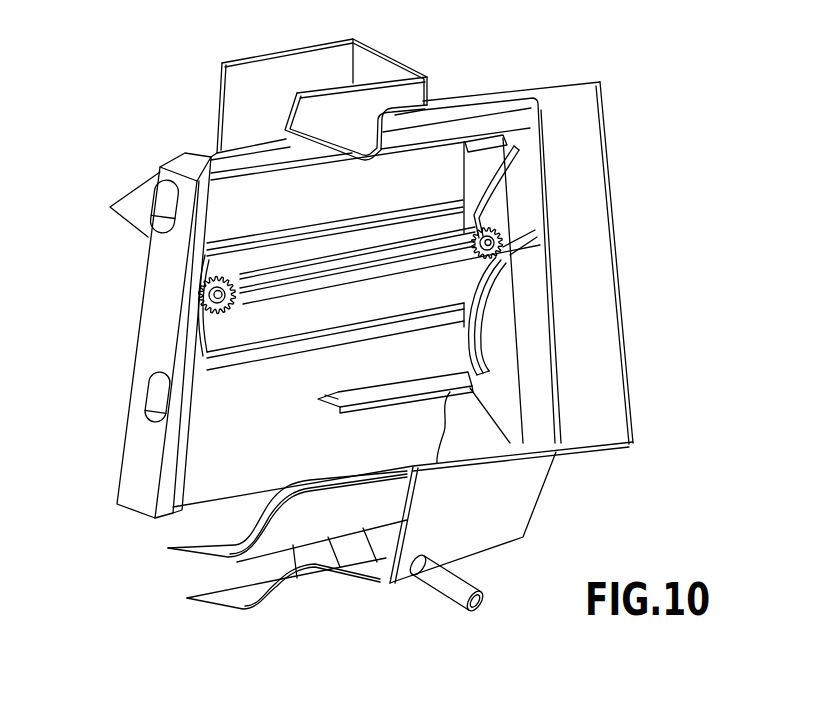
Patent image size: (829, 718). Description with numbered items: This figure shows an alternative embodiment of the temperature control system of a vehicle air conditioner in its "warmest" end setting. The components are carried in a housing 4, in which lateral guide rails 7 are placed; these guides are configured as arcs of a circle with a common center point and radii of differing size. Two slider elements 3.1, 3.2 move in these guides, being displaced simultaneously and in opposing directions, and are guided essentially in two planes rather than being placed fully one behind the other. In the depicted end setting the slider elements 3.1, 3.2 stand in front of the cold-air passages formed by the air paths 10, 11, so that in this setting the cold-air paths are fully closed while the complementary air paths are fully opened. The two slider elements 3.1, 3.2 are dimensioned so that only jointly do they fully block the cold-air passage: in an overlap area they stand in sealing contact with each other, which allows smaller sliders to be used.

The air path 10 is at (250, 196).
The slider element 3.1 is at (440, 227).
The slider element 3.2 is at (410, 281).
The guide rails 7 is at (513, 149).
The air path 11 is at (328, 371).
The housing 4 is at (475, 512).